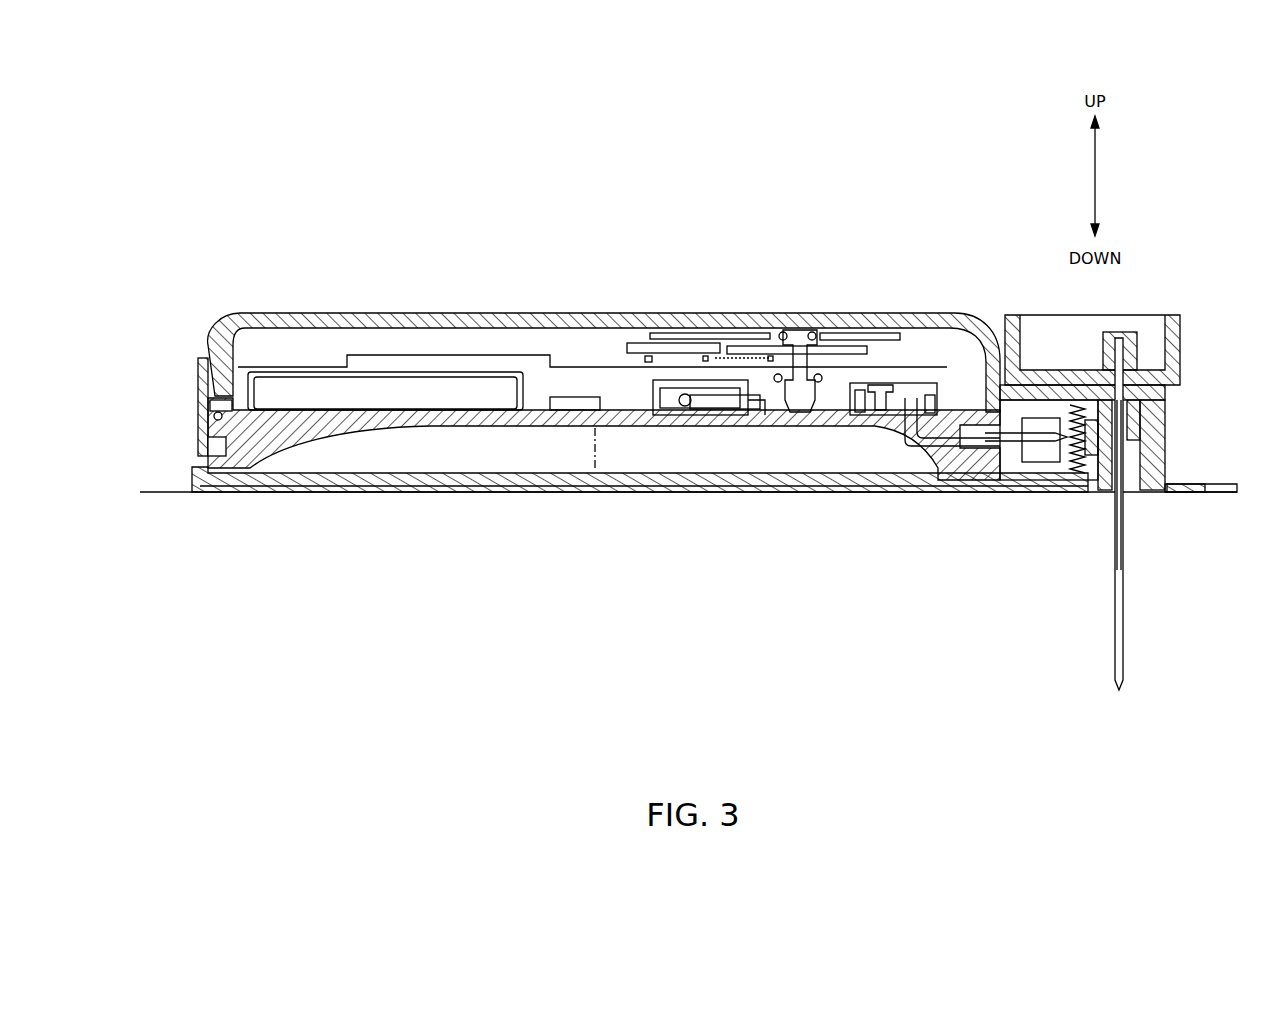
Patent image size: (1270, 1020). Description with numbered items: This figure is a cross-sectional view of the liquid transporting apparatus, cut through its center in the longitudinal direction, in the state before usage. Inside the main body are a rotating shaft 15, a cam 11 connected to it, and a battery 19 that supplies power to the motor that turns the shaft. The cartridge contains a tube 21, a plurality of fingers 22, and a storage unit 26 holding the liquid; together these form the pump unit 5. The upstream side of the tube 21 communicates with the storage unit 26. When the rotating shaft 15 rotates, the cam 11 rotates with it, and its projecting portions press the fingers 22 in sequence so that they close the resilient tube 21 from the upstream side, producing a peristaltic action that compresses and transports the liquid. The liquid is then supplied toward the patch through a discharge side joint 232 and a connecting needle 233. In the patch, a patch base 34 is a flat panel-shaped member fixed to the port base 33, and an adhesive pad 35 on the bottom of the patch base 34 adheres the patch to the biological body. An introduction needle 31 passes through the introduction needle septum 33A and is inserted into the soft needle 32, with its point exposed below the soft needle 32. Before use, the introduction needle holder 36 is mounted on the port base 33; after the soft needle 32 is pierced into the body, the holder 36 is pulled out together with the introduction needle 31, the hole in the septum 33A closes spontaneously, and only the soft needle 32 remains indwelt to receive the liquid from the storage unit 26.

The pump unit 5 is at (636, 390).
The cam 11 is at (775, 414).
The rotating shaft 15 is at (797, 340).
The battery 19 is at (383, 393).
The tube 21 is at (680, 398).
The fingers 22 is at (715, 411).
The storage unit 26 is at (370, 464).
The introduction needle 31 is at (1125, 608).
The soft needle 32 is at (1125, 528).
The port base 33 is at (1157, 430).
The introduction needle septum 33A is at (1137, 399).
The patch base 34 is at (862, 491).
The adhesive pad 35 is at (155, 494).
The introduction needle holder 36 is at (1175, 348).
The discharge side joint 232 is at (927, 392).
The connecting needle 233 is at (963, 480).